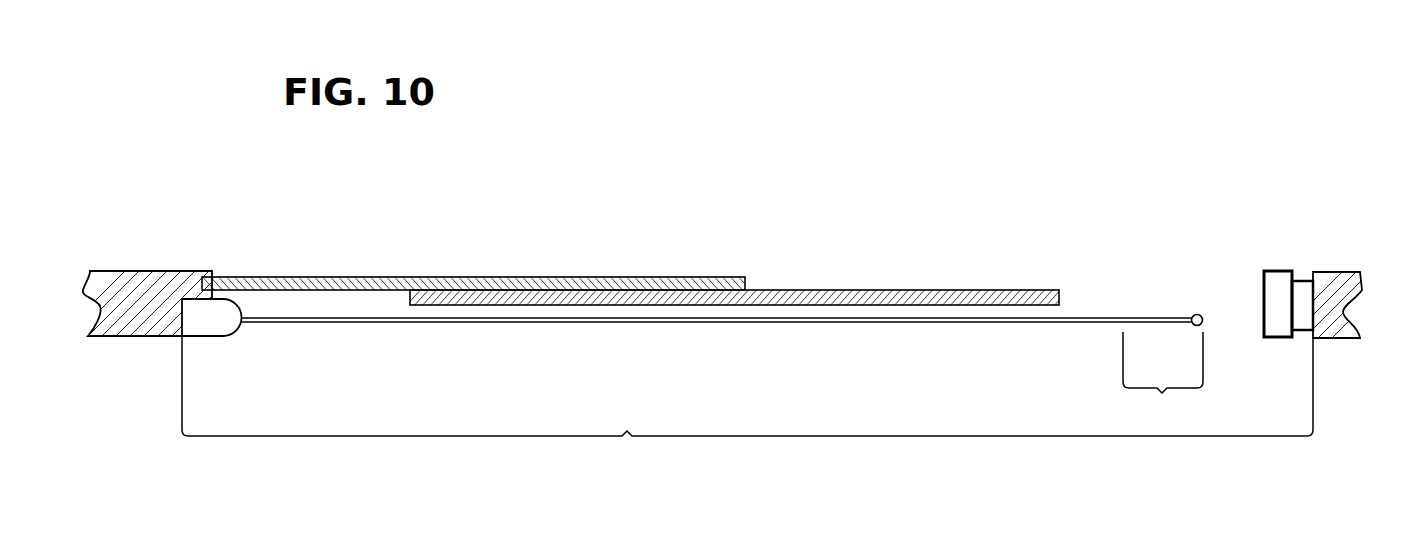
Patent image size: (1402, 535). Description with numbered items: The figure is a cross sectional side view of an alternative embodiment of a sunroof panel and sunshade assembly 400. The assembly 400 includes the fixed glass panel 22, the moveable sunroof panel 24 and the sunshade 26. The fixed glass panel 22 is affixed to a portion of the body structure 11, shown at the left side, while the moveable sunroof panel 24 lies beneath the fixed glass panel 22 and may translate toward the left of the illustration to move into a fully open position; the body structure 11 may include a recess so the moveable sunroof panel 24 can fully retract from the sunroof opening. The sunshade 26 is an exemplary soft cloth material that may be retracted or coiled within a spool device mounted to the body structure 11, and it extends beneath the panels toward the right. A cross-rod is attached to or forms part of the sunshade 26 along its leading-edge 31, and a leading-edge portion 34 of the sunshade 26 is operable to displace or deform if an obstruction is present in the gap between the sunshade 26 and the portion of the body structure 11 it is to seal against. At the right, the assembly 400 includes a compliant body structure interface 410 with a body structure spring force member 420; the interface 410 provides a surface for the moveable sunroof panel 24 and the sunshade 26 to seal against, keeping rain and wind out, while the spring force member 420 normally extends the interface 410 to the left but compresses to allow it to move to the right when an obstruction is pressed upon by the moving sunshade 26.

The body structure 11 is at (158, 271).
The fixed glass panel 22 is at (553, 288).
The moveable sunroof panel 24 is at (877, 292).
The sunshade 26 is at (1110, 317).
The leading-edge 31 is at (1204, 320).
The leading-edge portion 34 is at (1163, 377).
The sunroof panel and sunshade assembly 400 is at (747, 402).
The compliant body structure interface 410 is at (1278, 270).
The body structure spring force member 420 is at (1303, 280).